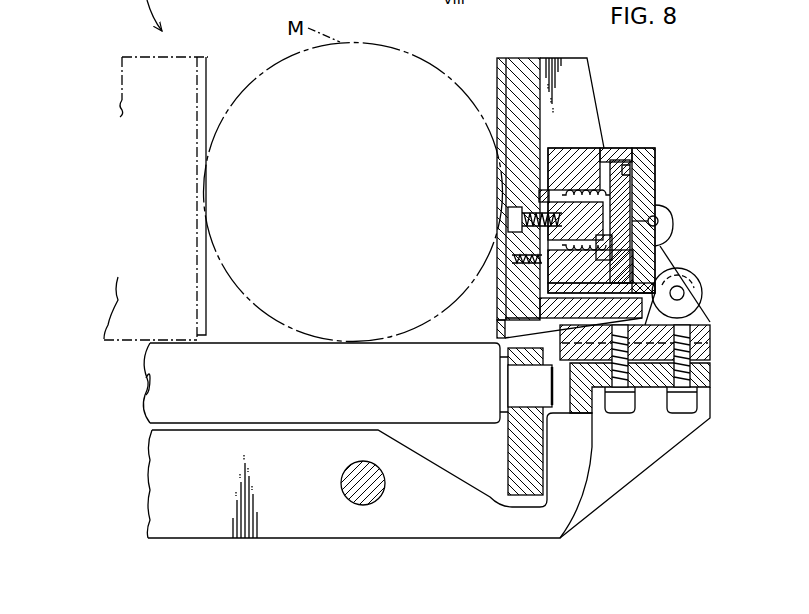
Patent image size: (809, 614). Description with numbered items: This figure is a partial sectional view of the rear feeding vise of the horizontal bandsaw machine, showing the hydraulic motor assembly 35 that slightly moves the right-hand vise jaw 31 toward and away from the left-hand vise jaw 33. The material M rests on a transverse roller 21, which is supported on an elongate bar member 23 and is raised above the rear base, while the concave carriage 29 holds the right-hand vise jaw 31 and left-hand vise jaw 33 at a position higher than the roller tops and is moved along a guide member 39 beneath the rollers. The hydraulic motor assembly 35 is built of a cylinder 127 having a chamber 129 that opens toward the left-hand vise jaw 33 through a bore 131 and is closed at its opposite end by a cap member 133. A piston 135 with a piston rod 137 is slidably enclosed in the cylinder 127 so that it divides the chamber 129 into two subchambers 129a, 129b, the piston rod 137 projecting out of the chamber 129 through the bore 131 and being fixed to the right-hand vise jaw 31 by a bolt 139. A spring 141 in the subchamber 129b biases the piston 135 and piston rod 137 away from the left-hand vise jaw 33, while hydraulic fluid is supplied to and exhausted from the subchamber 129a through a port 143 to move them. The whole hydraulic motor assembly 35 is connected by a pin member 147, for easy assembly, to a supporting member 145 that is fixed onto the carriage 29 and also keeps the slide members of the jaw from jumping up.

The transverse rollers 21 is at (350, 348).
The elongate bar member 23 is at (527, 457).
The carriage 29 is at (303, 496).
The right-hand vise jaw 31 is at (521, 85).
The left-hand vise jaw 33 is at (183, 66).
The hydraulic motor assembly 35 is at (667, 141).
The guide member 39 is at (386, 485).
The cylinder 127 is at (603, 148).
The chamber 129 is at (640, 177).
The subchamber 129a is at (636, 200).
The subchamber 129b is at (580, 187).
The bore 131 is at (558, 188).
The cap member 133 is at (634, 186).
The piston 135 is at (614, 249).
The piston rod 137 is at (543, 196).
The bolt 139 is at (514, 220).
The spring 141 is at (562, 268).
The port 143 is at (659, 224).
The supporting member 145 is at (698, 334).
The pin member 147 is at (685, 293).